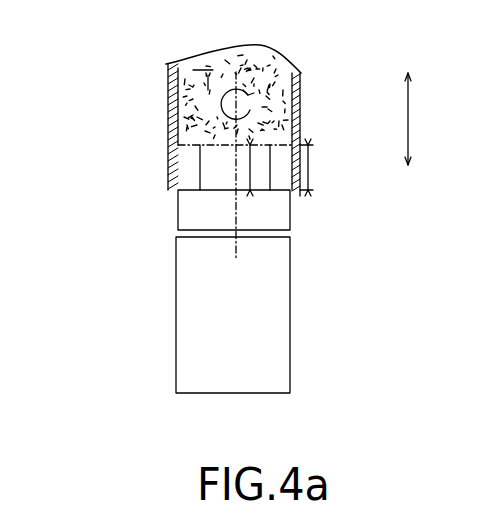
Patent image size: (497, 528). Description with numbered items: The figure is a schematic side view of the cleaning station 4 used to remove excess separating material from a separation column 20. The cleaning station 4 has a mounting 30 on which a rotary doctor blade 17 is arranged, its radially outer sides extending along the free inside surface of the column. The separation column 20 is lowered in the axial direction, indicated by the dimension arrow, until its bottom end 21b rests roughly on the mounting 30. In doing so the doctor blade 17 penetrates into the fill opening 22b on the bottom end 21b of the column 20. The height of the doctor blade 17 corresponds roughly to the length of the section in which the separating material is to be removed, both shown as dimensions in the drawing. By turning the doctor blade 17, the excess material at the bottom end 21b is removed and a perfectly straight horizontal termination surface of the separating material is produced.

The cleaning station 4 is at (358, 302).
The separation column 20 is at (167, 85).
The fill opening 22b is at (188, 165).
The rotary doctor blade 17 is at (190, 193).
The mounting 30 is at (188, 216).
The bottom end 21b is at (312, 195).